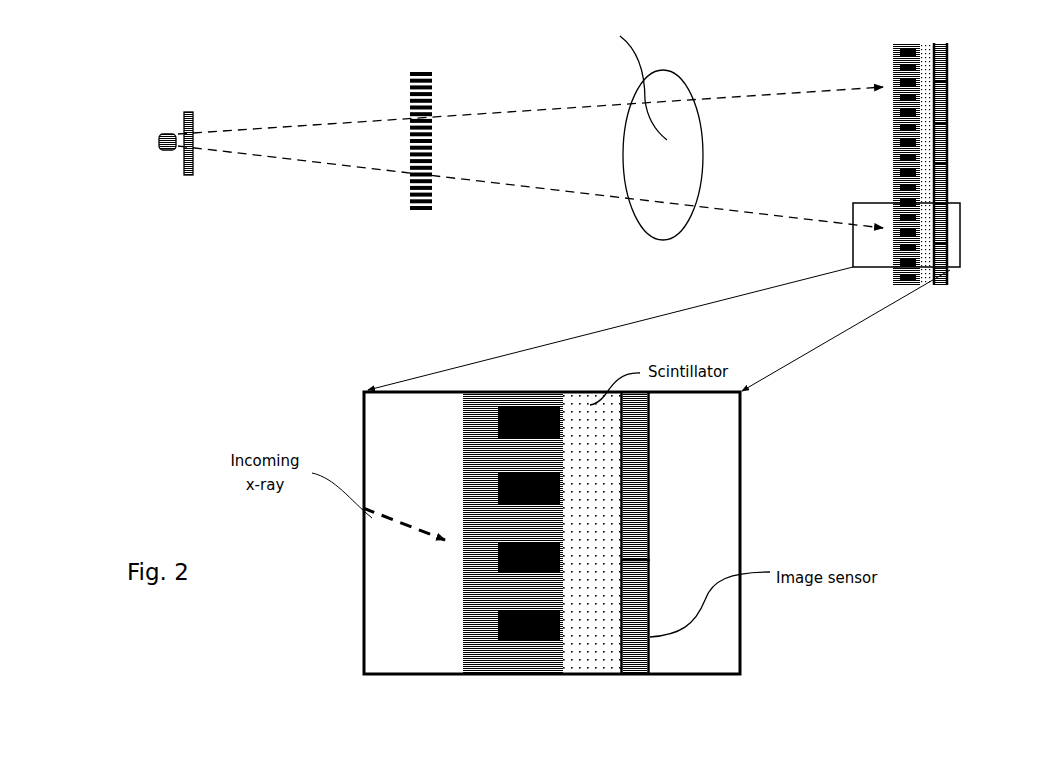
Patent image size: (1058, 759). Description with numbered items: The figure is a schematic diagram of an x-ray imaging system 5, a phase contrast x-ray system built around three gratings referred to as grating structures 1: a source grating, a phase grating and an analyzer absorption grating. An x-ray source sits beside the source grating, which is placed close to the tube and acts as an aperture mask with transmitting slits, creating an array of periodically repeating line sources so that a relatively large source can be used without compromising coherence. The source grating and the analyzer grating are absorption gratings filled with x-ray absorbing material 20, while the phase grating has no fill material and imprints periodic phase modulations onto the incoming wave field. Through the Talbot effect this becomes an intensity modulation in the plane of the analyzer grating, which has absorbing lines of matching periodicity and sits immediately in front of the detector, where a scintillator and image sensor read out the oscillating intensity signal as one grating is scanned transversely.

The grating structures 1 is at (422, 213).
The x-ray imaging system 5 is at (124, 385).
The x-ray absorbing material 20 is at (540, 405).